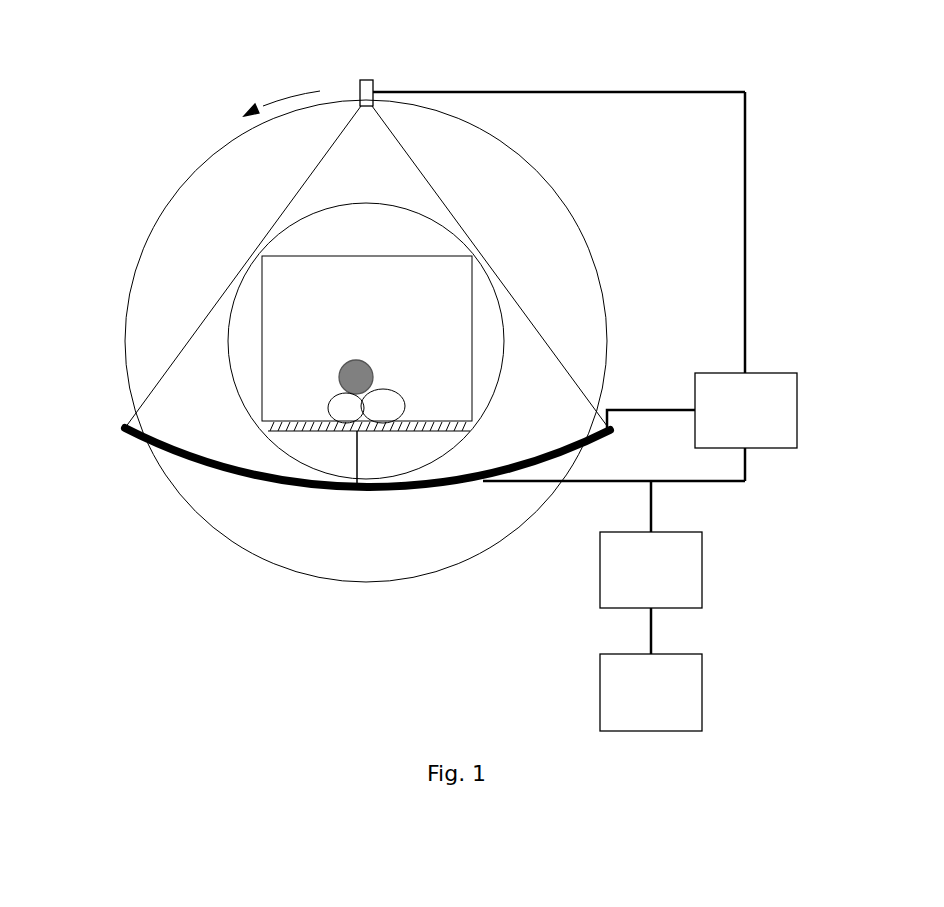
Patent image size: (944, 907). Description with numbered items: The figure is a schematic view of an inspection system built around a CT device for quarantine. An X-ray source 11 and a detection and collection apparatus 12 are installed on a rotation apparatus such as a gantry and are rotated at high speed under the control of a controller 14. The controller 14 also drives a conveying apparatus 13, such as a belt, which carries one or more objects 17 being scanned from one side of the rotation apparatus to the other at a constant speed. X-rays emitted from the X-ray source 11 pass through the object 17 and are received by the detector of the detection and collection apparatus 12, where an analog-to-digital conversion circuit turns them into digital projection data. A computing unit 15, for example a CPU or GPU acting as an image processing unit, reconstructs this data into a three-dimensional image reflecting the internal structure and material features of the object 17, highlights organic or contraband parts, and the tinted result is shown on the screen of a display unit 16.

The X-ray source 11 is at (367, 232).
The detection and collection apparatus 12 is at (330, 431).
The conveying apparatus 13 is at (329, 370).
The controller 14 is at (778, 389).
The computing unit 15 is at (690, 567).
The display unit 16 is at (690, 690).
The object being scanned 17 is at (382, 386).